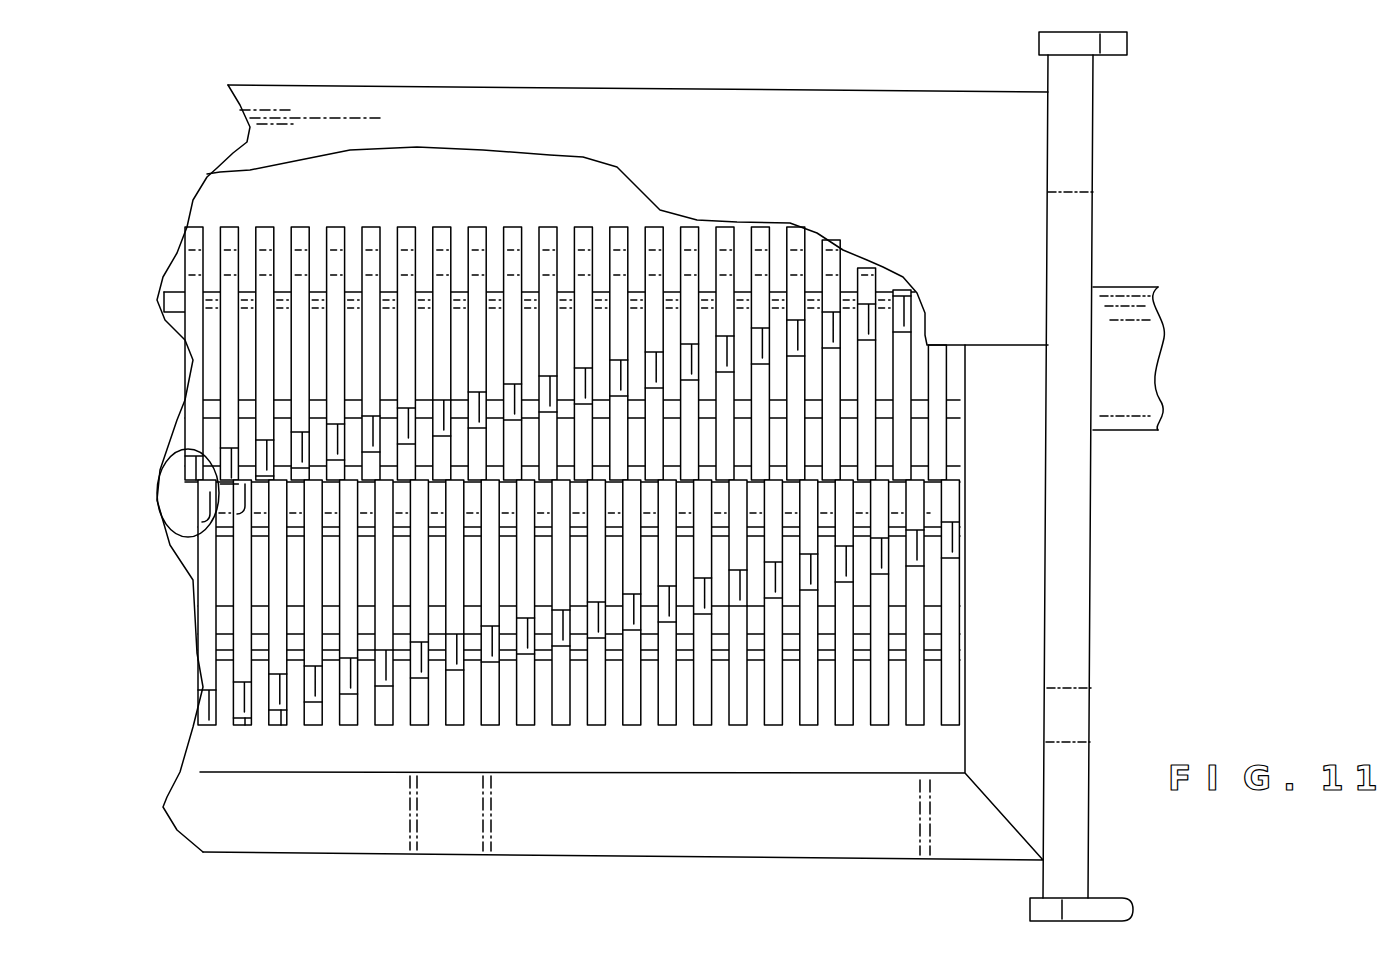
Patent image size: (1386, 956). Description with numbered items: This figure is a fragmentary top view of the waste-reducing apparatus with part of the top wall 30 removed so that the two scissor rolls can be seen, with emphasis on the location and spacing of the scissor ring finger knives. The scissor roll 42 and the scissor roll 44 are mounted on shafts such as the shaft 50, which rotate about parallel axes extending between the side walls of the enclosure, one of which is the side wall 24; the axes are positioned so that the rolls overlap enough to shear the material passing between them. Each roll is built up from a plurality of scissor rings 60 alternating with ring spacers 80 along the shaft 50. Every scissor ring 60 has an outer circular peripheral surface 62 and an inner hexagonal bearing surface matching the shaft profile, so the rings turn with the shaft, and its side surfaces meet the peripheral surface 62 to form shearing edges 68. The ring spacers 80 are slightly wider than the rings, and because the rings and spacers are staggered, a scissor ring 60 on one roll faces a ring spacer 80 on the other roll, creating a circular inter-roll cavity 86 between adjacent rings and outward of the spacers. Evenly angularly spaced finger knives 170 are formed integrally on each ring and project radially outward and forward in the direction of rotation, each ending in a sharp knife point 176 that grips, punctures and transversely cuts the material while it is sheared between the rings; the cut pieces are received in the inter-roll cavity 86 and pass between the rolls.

The side wall 24 is at (1095, 632).
The top wall 30 is at (903, 150).
The scissor roll 42 is at (637, 236).
The scissor roll 44 is at (601, 740).
The shaft 50 is at (1128, 352).
The scissor ring 60 is at (758, 240).
The outer circular peripheral surface 62 is at (549, 235).
The shearing edge 68 is at (322, 232).
The ring spacer 80 is at (896, 735).
The inter-roll cavity 86 is at (905, 510).
The finger knife 170 is at (905, 306).
The knife point 176 is at (216, 521).